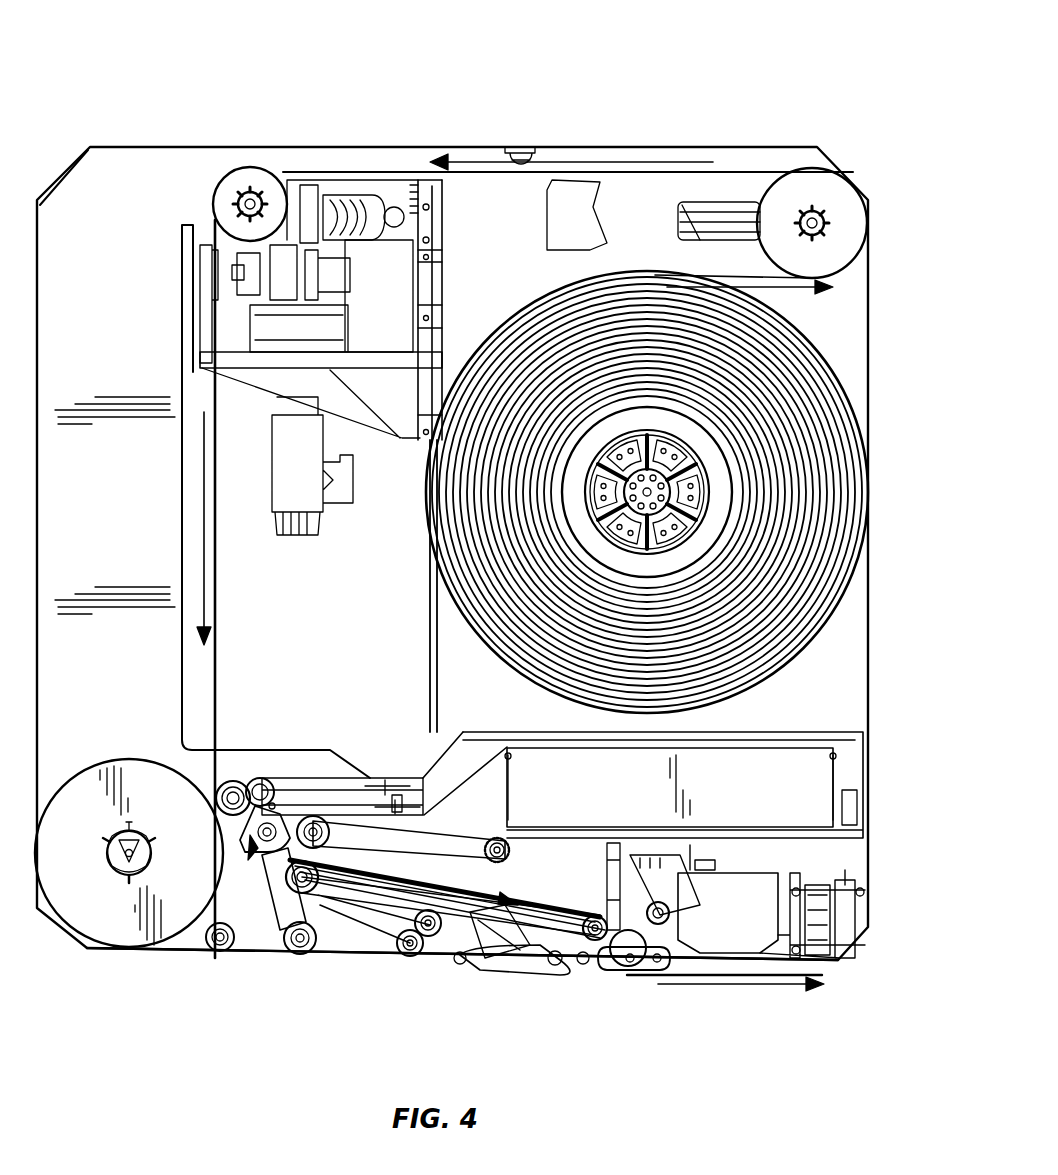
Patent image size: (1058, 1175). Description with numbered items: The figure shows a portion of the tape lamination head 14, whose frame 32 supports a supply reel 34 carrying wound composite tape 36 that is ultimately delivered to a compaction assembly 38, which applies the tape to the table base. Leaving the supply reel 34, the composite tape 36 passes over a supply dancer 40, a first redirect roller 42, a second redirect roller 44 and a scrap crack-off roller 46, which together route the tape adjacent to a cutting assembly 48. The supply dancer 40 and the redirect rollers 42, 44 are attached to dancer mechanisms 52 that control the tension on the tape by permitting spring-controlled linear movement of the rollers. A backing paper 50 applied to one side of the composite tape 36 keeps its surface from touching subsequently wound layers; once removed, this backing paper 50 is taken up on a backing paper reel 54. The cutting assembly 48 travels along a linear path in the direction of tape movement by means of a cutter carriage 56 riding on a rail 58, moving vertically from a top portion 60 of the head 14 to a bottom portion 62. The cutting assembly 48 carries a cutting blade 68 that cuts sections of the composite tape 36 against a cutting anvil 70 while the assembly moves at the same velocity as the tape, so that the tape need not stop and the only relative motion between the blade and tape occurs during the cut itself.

The tape lamination head 14 is at (846, 133).
The frame 32 is at (118, 314).
The supply reel 34 is at (708, 473).
The composite tape 36 is at (845, 380).
The compaction assembly 38 is at (630, 980).
The supply dancer 40 is at (868, 226).
The first redirect roller 42 is at (240, 170).
The second redirect roller 44 is at (230, 780).
The scrap crack-off roller 46 is at (262, 786).
The cutting assembly 48 is at (168, 251).
The backing paper 50 is at (118, 760).
The dancer mechanisms 52 is at (722, 200).
The backing paper reel 54 is at (112, 892).
The cutter carriage 56 is at (432, 364).
The rail 58 is at (430, 610).
The top portion 60 is at (130, 145).
The bottom portion 62 is at (192, 958).
The cutting blade 68 is at (222, 268).
The cutting anvil 70 is at (202, 290).